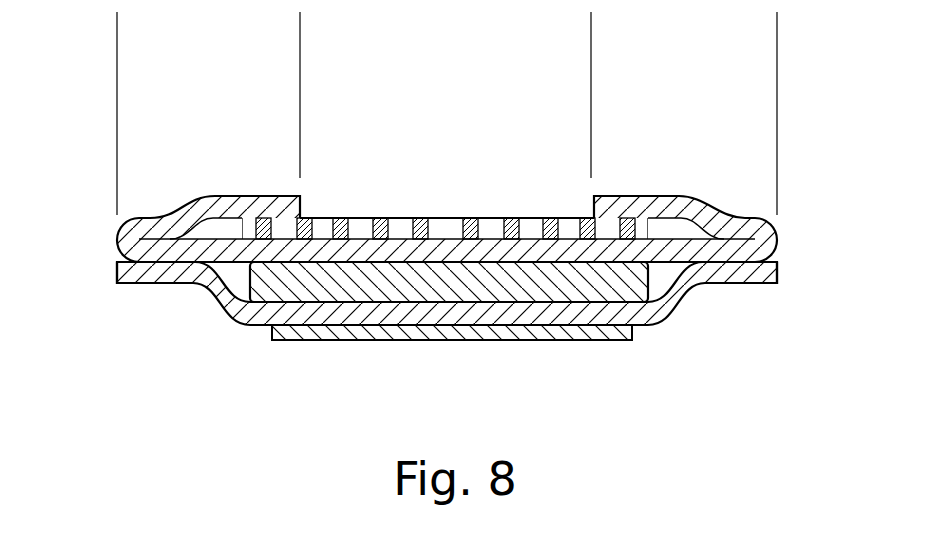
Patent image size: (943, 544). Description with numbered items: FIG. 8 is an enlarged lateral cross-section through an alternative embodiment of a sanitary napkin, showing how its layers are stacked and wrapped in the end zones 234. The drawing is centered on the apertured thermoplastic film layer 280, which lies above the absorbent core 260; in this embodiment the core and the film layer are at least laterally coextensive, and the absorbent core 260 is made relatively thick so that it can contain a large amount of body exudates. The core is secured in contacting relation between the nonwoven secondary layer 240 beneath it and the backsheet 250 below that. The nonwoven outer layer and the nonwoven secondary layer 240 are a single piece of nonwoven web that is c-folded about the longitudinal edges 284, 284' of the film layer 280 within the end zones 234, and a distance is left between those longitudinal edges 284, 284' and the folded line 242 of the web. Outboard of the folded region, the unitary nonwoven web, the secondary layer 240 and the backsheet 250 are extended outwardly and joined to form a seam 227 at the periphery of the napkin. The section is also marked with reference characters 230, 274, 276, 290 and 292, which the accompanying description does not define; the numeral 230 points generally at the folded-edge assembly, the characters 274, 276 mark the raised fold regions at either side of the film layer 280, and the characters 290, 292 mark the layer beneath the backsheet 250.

The seam 227 is at (148, 218).
The sensor assembly 230 is at (760, 200).
The end zones 234 is at (117, 40).
The nonwoven secondary layer 240 is at (232, 262).
The folded line 242 is at (778, 235).
The backsheet 250 is at (533, 312).
The absorbent core 260 is at (363, 288).
The left raised rim 274 is at (207, 198).
The right raised rim 276 is at (648, 198).
The apertured thermoplastic film layer 280 is at (446, 216).
The longitudinal edge of the apertured thermoplastic film layer 284 is at (709, 281).
The longitudinal edge of the apertured thermoplastic film layer 284' is at (124, 299).
The bonding layer 290 is at (583, 328).
The backing plate 292 is at (463, 333).